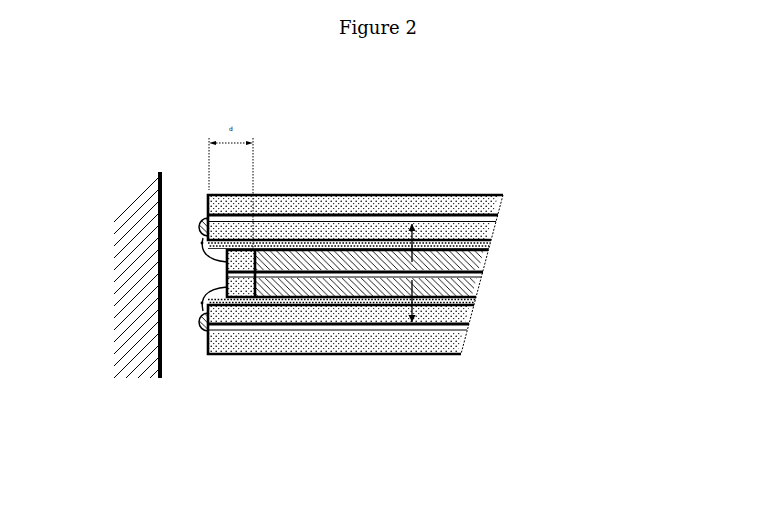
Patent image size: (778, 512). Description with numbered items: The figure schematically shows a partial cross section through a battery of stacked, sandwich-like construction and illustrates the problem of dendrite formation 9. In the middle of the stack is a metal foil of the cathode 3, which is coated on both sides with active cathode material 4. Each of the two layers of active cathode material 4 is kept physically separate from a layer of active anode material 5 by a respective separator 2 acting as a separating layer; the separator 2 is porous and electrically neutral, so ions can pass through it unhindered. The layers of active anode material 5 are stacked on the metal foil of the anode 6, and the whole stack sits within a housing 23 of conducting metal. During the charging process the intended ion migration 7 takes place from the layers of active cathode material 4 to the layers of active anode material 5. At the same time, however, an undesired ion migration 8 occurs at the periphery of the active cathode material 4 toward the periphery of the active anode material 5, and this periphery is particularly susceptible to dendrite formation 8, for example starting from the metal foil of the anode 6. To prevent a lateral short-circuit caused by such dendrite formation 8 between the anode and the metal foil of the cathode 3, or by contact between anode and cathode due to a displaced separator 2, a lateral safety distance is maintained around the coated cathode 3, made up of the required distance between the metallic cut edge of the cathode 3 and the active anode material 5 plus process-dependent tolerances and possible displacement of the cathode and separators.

The separator 2 is at (488, 243).
The cathode 3 is at (485, 275).
The active cathode material 4 is at (485, 255).
The active anode material 5 is at (496, 215).
The anode 6 is at (497, 219).
The ion migration 7 is at (424, 243).
The dendrite formation 8 is at (225, 262).
The dendrite formation 9 is at (200, 231).
The housing 23 is at (135, 203).